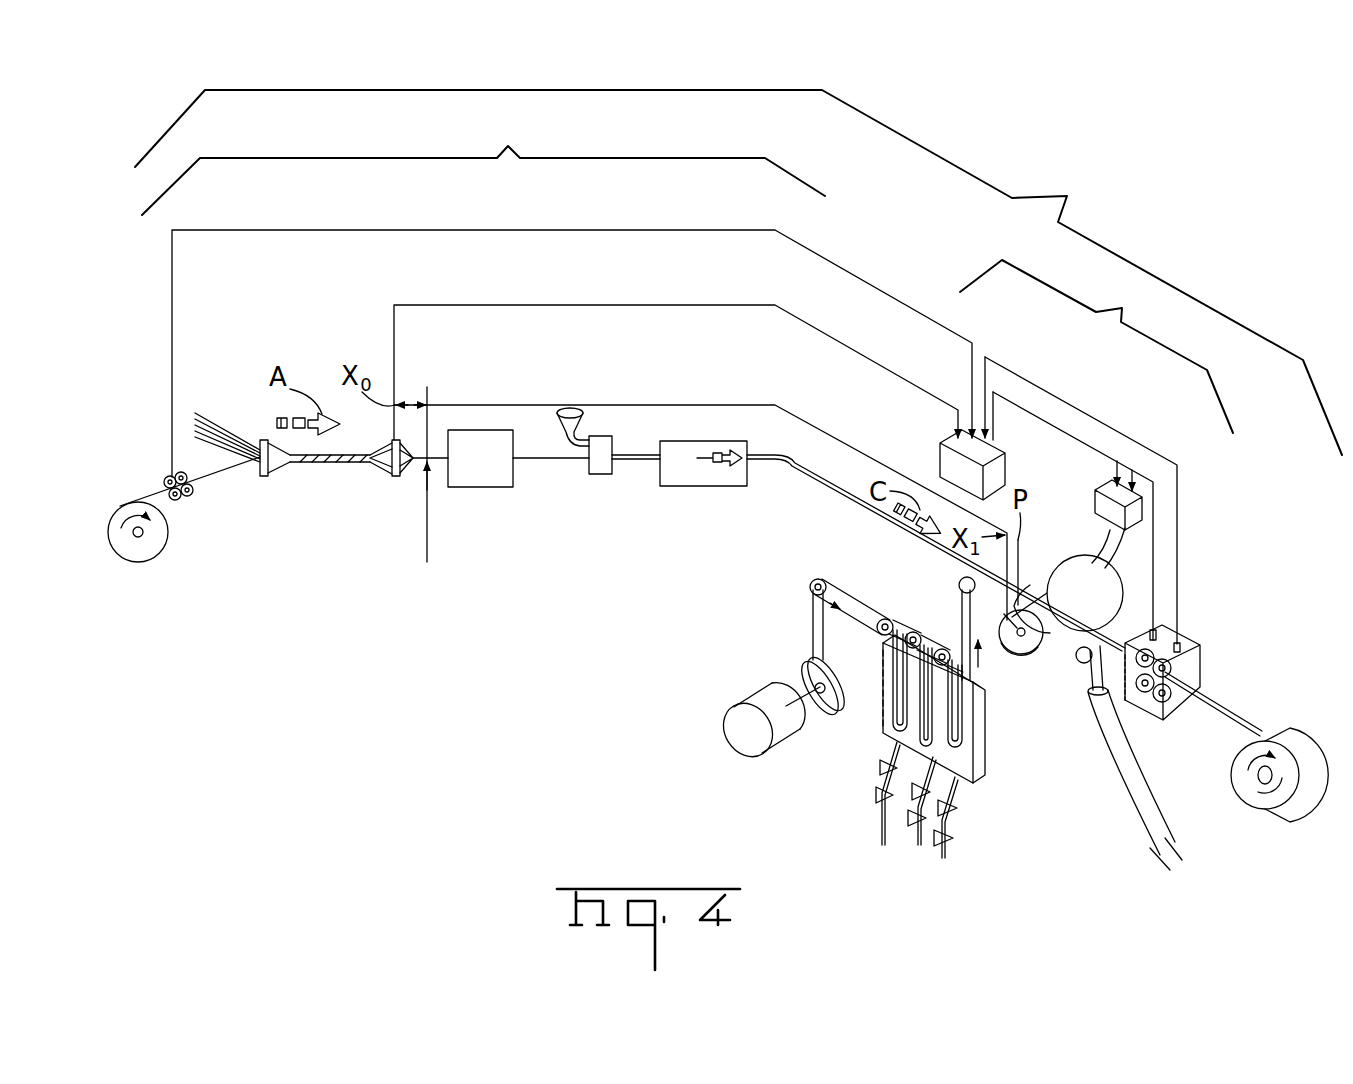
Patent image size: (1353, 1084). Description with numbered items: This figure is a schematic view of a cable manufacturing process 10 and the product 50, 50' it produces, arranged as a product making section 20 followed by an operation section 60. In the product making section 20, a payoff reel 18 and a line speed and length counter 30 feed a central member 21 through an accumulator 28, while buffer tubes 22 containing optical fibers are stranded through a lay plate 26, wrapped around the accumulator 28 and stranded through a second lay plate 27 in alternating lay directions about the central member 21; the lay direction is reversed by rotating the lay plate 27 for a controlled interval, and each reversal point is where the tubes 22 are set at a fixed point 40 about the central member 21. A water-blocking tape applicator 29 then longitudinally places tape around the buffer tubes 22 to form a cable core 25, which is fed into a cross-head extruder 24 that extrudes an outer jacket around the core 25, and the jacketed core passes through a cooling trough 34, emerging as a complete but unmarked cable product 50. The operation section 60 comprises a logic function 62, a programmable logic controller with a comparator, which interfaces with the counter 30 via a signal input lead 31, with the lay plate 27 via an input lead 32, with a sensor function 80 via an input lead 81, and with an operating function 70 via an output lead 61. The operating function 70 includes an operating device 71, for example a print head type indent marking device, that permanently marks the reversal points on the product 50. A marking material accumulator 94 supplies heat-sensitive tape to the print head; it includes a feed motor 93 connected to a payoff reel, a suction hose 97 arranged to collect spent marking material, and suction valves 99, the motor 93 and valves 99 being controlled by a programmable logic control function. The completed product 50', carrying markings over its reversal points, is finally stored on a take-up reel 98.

The manufacturing process 10 is at (738, 272).
The payoff reel 18 is at (145, 560).
The product making section 20 is at (483, 164).
The central member 21 is at (210, 475).
The buffer tubes 22 is at (232, 423).
The cross-head extruder 24 is at (560, 423).
The cable core 25 is at (545, 460).
The lay plate 26 is at (265, 478).
The second lay plate 27 is at (396, 478).
The accumulator 28 is at (326, 466).
The water-blocking tape applicator 29 is at (475, 490).
The line speed and length counter 30 is at (163, 474).
The signal input lead 31 is at (172, 313).
The input lead 32 is at (394, 330).
The cooling trough 34 is at (695, 487).
The fixed point 40 is at (424, 492).
The cable product 50 is at (936, 553).
The completed product 50' is at (1237, 678).
The operation section 60 is at (1096, 346).
The output lead 61 is at (1052, 425).
The logic function 62 is at (940, 445).
The operating function 70 is at (1060, 555).
The operating device 71 is at (1030, 658).
The sensor function 80 is at (1212, 646).
The input lead 81 is at (1083, 414).
The feed motor 93 is at (733, 717).
The marking material accumulator 94 is at (990, 762).
The suction hose 97 is at (1118, 818).
The take-up reel 98 is at (1258, 812).
The suction valves 99 is at (910, 808).